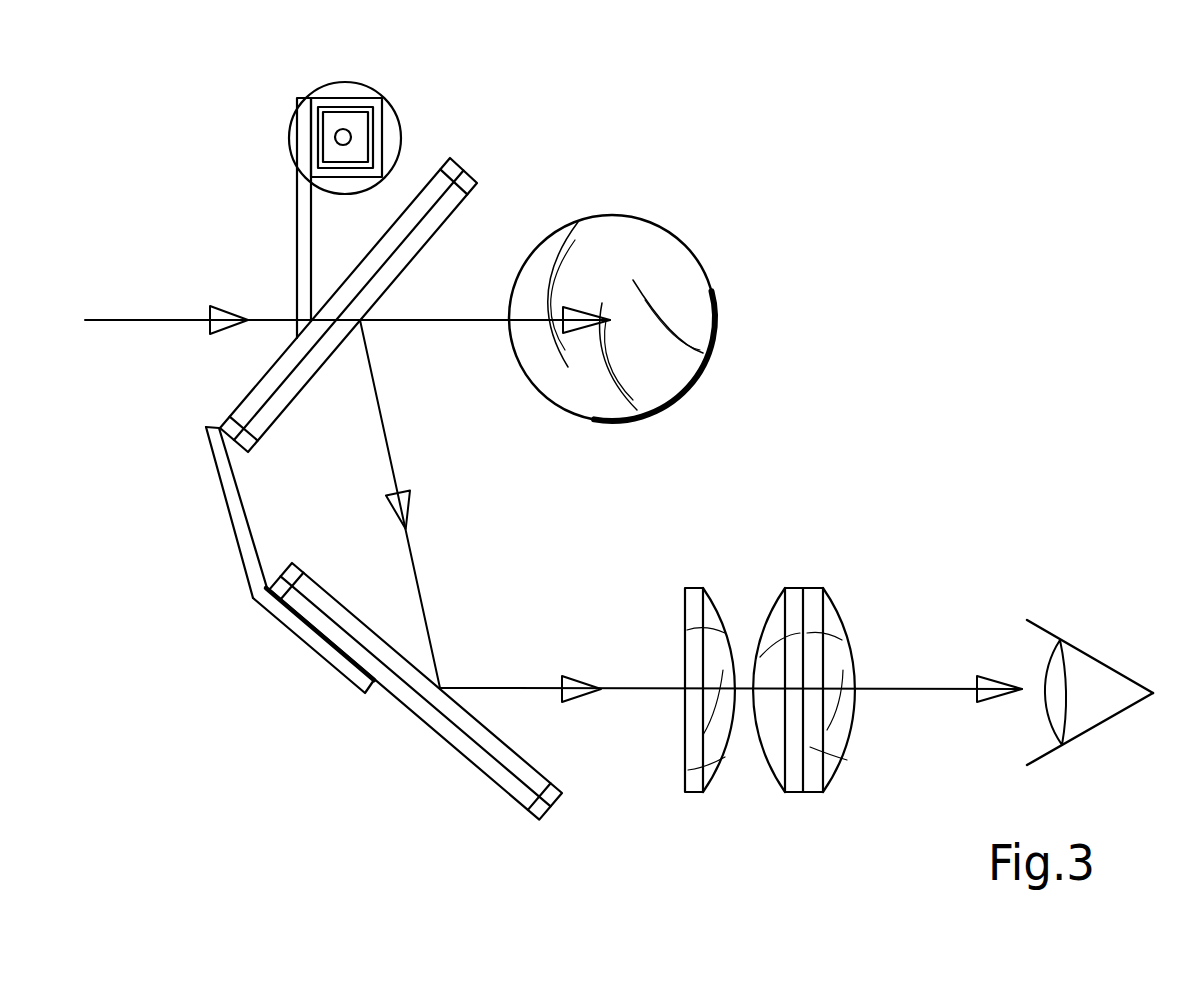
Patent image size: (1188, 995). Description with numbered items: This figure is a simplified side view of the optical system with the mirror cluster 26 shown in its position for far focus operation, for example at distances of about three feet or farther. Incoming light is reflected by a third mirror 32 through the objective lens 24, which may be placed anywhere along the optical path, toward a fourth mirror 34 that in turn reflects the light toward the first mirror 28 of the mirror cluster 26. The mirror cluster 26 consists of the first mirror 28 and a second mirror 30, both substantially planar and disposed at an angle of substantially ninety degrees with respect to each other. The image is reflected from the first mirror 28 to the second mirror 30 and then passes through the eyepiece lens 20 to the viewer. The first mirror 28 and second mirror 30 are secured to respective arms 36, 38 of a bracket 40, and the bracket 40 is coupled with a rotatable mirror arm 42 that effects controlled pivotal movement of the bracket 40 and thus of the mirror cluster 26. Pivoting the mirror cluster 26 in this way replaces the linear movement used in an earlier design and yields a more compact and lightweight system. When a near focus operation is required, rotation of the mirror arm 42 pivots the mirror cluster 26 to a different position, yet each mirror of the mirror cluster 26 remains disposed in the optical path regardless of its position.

The eyepiece lens 20 is at (795, 588).
The objective lens 24 is at (655, 289).
The mirror cluster 26 is at (168, 622).
The first mirror 28 is at (452, 161).
The second mirror 30 is at (490, 765).
The third mirror 32 is at (655, 289).
The fourth mirror 34 is at (623, 228).
The arm 36 is at (220, 408).
The arm 38 is at (327, 660).
The bracket 40 is at (297, 247).
The rotatable mirror arm 42 is at (343, 129).